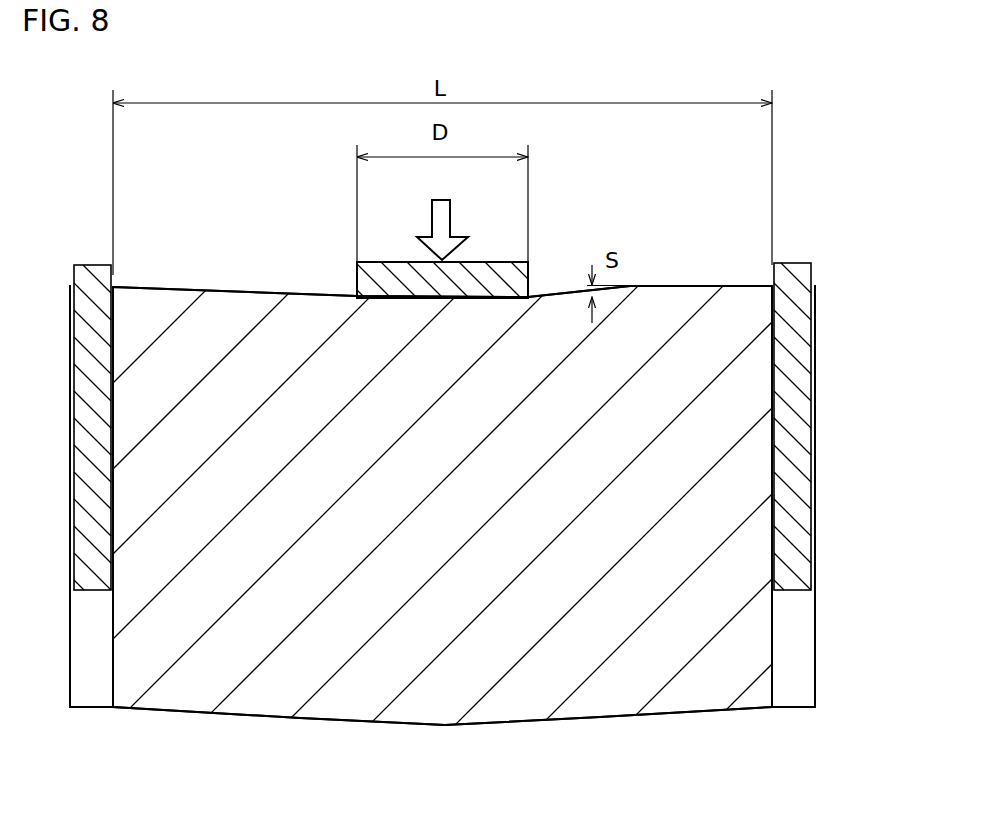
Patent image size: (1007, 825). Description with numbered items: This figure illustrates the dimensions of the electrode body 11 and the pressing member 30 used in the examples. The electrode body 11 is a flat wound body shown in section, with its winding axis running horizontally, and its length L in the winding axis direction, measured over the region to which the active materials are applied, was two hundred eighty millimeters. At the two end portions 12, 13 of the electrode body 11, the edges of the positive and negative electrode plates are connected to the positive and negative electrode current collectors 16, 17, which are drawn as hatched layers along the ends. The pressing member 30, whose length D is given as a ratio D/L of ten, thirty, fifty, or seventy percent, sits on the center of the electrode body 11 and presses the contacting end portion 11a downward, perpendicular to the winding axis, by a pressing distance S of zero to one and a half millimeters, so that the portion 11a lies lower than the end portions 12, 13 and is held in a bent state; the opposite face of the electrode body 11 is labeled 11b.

The electrode body 11 is at (567, 658).
The end portion of the electrode body contacting the pressing member 11a is at (397, 300).
The second main surface 11b is at (332, 723).
The end portion of the electrode body 12 is at (90, 641).
The end portion of the electrode body 13 is at (790, 646).
The positive electrode current collector 16 is at (88, 438).
The negative electrode current collector 17 is at (792, 390).
The pressing member 30 is at (482, 260).